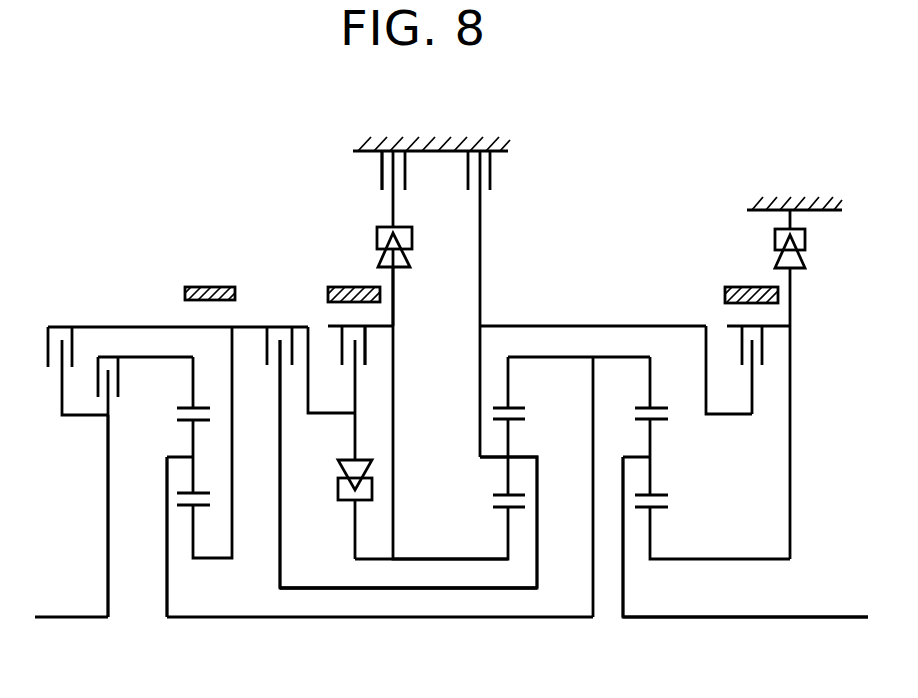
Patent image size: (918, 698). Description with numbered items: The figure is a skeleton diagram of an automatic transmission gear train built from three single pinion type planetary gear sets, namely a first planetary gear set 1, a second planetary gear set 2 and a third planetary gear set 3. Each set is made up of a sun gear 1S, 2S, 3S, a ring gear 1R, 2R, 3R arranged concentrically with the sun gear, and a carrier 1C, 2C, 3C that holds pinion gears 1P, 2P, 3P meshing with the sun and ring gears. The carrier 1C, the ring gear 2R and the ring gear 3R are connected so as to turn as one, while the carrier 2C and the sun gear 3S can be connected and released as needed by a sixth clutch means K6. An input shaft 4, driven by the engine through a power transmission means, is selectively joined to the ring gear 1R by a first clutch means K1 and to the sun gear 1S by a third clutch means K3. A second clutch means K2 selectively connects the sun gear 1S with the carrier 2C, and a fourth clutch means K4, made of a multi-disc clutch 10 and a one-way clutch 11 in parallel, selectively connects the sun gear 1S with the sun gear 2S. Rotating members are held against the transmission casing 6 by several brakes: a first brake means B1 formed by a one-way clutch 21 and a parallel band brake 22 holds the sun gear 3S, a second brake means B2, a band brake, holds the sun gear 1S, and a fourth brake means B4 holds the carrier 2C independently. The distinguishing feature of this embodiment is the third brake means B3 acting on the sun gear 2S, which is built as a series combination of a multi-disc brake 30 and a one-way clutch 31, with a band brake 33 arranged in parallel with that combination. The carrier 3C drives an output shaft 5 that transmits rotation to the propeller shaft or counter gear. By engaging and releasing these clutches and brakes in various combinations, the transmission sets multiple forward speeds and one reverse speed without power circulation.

The transmission casing 6 is at (446, 151).
The multi-disc brake 30 is at (382, 181).
The third brake means B3 is at (346, 212).
The fourth brake means B4 is at (502, 304).
The one-way clutch 31 is at (377, 241).
The band brake 33 is at (350, 287).
The second brake means B2 is at (211, 279).
The third clutch means K3 is at (78, 356).
The first clutch means K1 is at (145, 473).
The second clutch means K2 is at (315, 442).
The multi-disc clutch 10 is at (365, 350).
The one-way clutch 11 is at (340, 470).
The ring gear 1R is at (186, 405).
The carrier 1C is at (171, 458).
The pinion gear 1P is at (194, 493).
The sun gear 1S is at (197, 507).
The input shaft 4 is at (56, 617).
The first planetary gear set 1 is at (183, 576).
The fourth clutch means K4 is at (326, 517).
The ring gear 2R is at (516, 407).
The carrier 2C is at (523, 457).
The pinion gear 2P is at (503, 493).
The sun gear 2S is at (502, 512).
The second planetary gear set 2 is at (489, 571).
The ring gear 3R is at (648, 408).
The carrier 3C is at (640, 457).
The pinion gear 3P is at (660, 495).
The sun gear 3S is at (660, 512).
The third planetary gear set 3 is at (653, 579).
The output shaft 5 is at (800, 617).
The sixth clutch means K6 is at (762, 352).
The first brake means B1 is at (732, 253).
The band brake 22 is at (748, 279).
The one-way clutch 21 is at (805, 256).